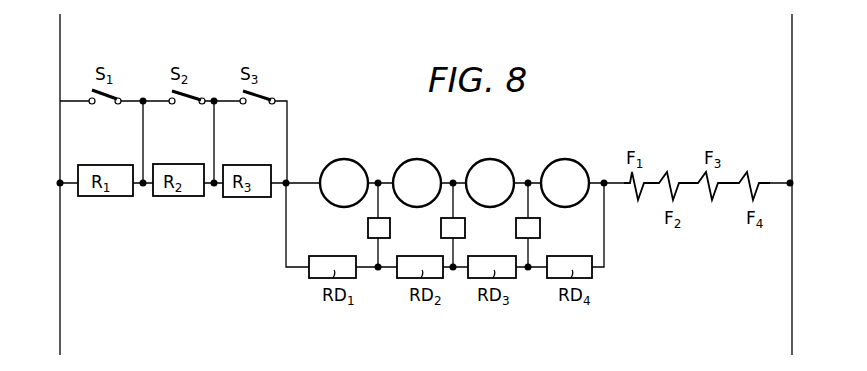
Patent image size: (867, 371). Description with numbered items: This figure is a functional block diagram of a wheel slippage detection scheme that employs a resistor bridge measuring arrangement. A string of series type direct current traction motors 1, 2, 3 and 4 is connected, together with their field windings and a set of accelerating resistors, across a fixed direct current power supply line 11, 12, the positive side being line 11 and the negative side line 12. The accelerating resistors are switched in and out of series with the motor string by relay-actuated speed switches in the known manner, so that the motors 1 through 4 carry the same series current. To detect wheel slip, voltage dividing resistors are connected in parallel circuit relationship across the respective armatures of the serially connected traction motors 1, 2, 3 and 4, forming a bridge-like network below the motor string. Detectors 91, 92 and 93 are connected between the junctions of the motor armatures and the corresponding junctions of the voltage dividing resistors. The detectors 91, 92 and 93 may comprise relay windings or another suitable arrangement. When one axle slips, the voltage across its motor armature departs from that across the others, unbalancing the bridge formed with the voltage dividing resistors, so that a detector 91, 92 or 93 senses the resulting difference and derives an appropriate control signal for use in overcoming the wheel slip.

The direct current power supply line 11 is at (60, 134).
The direct current power supply line 12 is at (793, 123).
The detector 91 is at (390, 229).
The detector 92 is at (465, 229).
The detector 93 is at (540, 229).
The direct current traction motor 1 is at (344, 183).
The direct current traction motor 2 is at (417, 183).
The direct current traction motor 3 is at (490, 183).
The direct current traction motor 4 is at (565, 183).